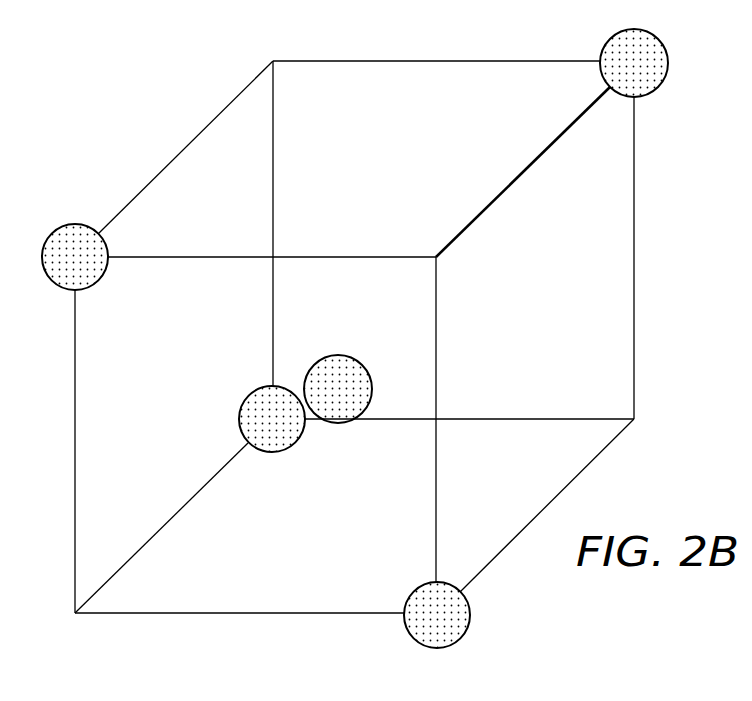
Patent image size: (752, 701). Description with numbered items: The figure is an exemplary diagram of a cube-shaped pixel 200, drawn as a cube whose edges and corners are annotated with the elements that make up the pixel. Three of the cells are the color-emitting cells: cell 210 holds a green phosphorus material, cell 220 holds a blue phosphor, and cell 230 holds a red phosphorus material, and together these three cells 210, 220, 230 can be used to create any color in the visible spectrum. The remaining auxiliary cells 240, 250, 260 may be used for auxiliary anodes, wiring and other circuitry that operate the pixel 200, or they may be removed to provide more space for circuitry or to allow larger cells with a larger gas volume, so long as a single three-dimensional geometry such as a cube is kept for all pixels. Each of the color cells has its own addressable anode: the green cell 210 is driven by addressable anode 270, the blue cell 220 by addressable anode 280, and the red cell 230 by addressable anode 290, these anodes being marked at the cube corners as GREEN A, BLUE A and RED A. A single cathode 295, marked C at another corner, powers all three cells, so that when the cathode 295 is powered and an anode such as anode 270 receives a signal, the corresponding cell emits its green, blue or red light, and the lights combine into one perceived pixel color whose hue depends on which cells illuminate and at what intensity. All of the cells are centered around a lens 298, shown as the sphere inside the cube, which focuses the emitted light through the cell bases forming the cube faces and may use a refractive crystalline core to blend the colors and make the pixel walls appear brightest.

The pixel 200 is at (147, 73).
The cell 210 is at (628, 282).
The cell 220 is at (263, 605).
The cell 230 is at (83, 452).
The auxiliary cell 240 is at (127, 217).
The auxiliary cell 250 is at (375, 153).
The auxiliary cell 260 is at (509, 63).
The addressable anode 270 is at (649, 95).
The addressable anode 280 is at (258, 387).
The addressable anode 290 is at (68, 223).
The cathode 295 is at (473, 608).
The lens 298 is at (340, 352).